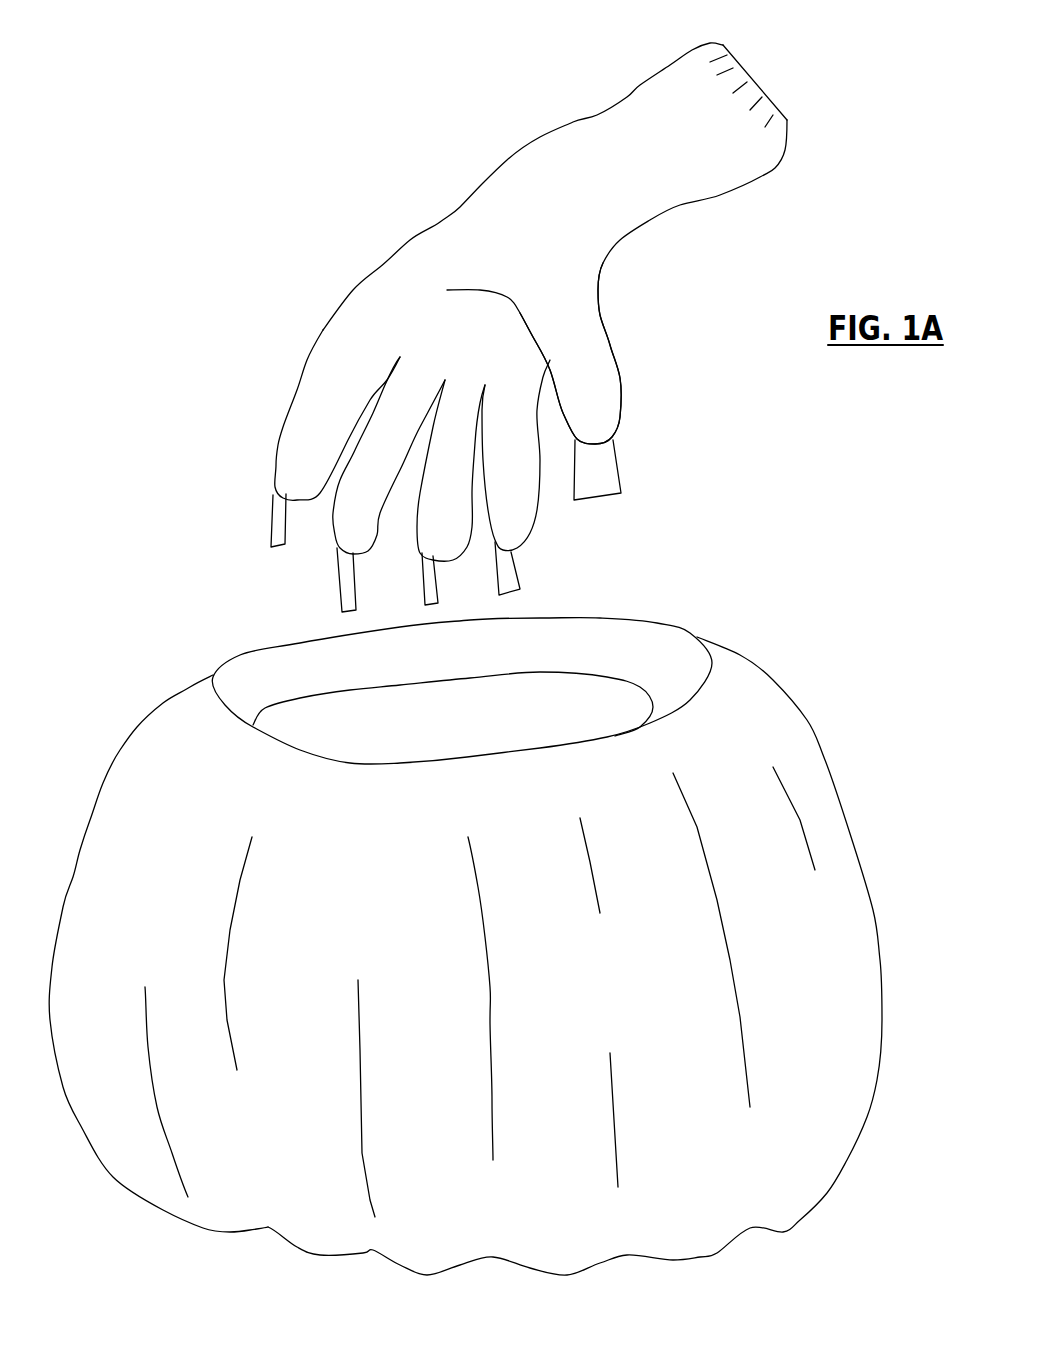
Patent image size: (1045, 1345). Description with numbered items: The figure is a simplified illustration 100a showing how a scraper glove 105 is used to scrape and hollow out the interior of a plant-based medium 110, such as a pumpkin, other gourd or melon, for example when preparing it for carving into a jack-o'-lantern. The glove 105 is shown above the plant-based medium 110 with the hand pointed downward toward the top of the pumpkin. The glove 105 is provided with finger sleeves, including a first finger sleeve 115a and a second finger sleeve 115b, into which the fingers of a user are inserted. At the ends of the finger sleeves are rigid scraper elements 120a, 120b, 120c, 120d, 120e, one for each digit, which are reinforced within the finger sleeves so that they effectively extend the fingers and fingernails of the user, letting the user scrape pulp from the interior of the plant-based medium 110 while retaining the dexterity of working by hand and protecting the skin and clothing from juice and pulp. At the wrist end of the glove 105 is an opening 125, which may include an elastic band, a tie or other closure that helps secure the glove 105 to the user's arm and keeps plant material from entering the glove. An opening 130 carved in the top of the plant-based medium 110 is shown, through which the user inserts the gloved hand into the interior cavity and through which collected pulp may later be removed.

The simplified illustration 100a is at (105, 103).
The scraper glove 105 is at (334, 251).
The plant-based medium 110 is at (829, 663).
The finger sleeve 115a is at (307, 361).
The finger sleeve 115b is at (622, 397).
The rigid scraper element 120a is at (272, 517).
The rigid scraper element 120b is at (337, 567).
The rigid scraper element 120c is at (425, 603).
The rigid scraper element 120d is at (520, 580).
The rigid scraper element 120e is at (620, 478).
The opening of the glove 125 is at (788, 89).
The opening 130 is at (605, 703).